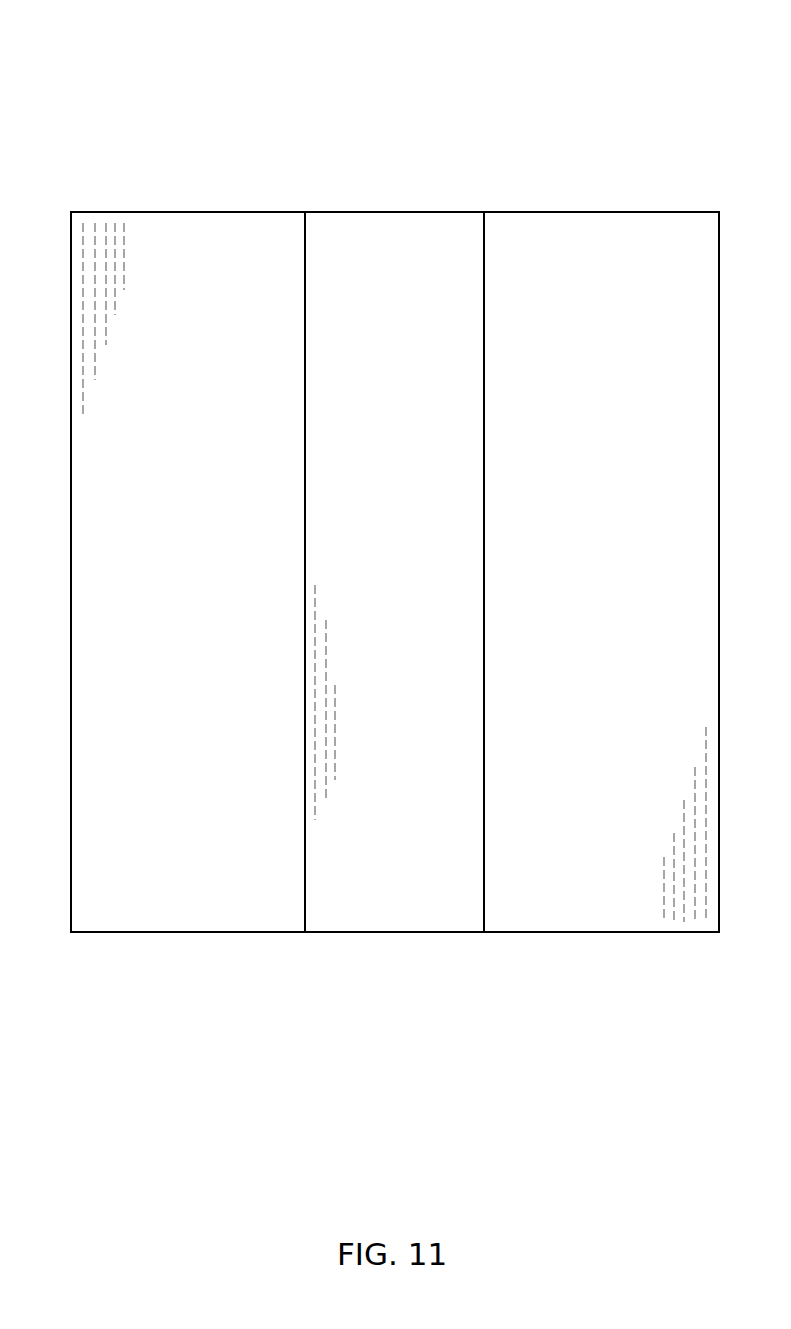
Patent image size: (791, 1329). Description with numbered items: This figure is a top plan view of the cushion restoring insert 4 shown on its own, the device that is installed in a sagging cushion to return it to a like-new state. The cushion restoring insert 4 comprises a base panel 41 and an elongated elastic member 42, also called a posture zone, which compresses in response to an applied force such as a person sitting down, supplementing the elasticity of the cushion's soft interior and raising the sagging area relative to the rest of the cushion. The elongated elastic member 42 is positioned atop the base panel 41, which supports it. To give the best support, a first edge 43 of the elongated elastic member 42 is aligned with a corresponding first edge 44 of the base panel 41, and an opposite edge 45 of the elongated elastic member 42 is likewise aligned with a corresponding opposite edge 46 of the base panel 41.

The cushion restoring insert 4 is at (137, 43).
The base panel 41 is at (338, 243).
The elongated elastic member 42 is at (680, 243).
The first edge 43 is at (390, 932).
The first edge 44 is at (182, 932).
The opposite edge 45 is at (458, 212).
The opposite edge 46 is at (196, 212).